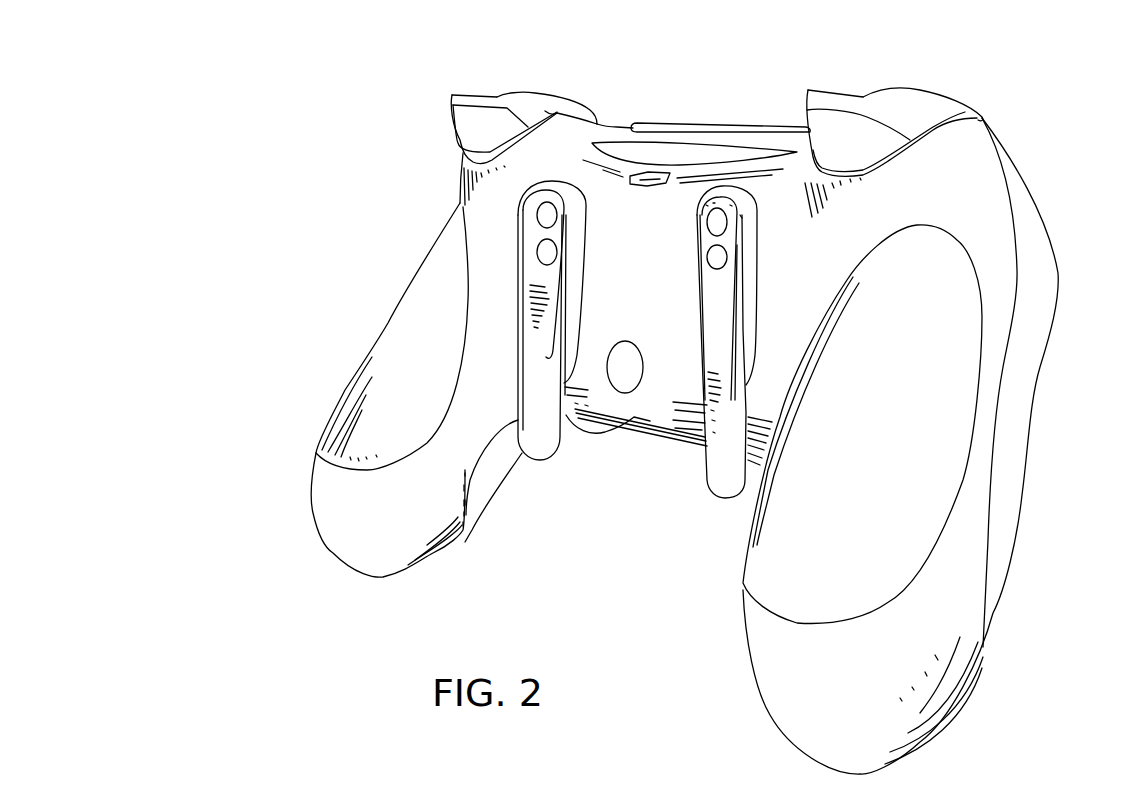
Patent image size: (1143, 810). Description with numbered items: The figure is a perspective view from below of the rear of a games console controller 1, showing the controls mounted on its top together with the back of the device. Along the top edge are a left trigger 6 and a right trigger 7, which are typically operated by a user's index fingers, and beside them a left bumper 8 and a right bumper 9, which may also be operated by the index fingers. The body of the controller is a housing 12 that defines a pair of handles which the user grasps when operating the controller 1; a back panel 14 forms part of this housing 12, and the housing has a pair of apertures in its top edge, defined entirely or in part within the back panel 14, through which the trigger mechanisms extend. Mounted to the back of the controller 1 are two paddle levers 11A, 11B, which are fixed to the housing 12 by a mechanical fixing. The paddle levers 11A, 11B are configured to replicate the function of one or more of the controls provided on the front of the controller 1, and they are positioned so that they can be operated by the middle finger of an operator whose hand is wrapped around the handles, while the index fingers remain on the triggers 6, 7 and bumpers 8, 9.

The controller 1 is at (1080, 87).
The left trigger 6 is at (853, 155).
The right trigger 7 is at (490, 145).
The left bumper 8 is at (965, 112).
The right bumper 9 is at (571, 111).
The paddle lever 11A is at (526, 453).
The paddle lever 11B is at (718, 478).
The housing 12 is at (1026, 460).
The back panel 14 is at (394, 530).